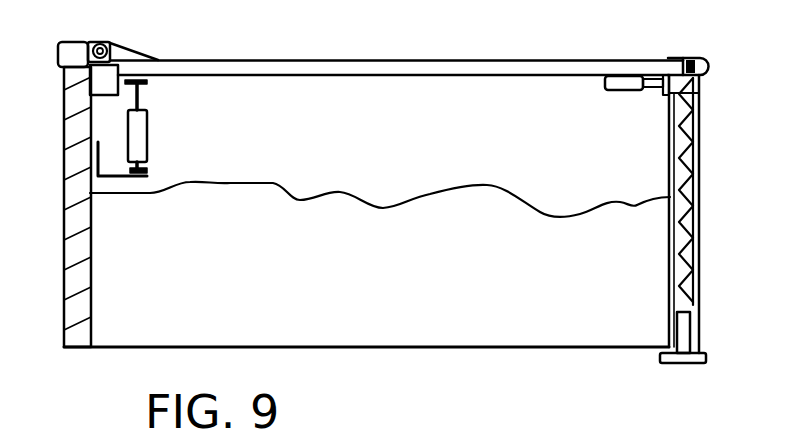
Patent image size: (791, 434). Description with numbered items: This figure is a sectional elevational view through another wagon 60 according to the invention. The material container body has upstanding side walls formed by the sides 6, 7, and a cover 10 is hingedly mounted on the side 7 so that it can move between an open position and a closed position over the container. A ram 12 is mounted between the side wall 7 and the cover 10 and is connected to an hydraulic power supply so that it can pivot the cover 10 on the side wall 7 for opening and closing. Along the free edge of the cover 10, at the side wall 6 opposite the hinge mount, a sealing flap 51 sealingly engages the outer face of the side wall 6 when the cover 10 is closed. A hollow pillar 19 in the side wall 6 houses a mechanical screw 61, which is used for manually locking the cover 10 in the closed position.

The side 6 is at (702, 122).
The side 7 is at (60, 217).
The cover 10 is at (370, 47).
The ram 12 is at (150, 135).
The hollow pillar 19 is at (702, 245).
The sealing flap 51 is at (712, 60).
The wagon 60 is at (438, 50).
The mechanical screw 61 is at (700, 173).